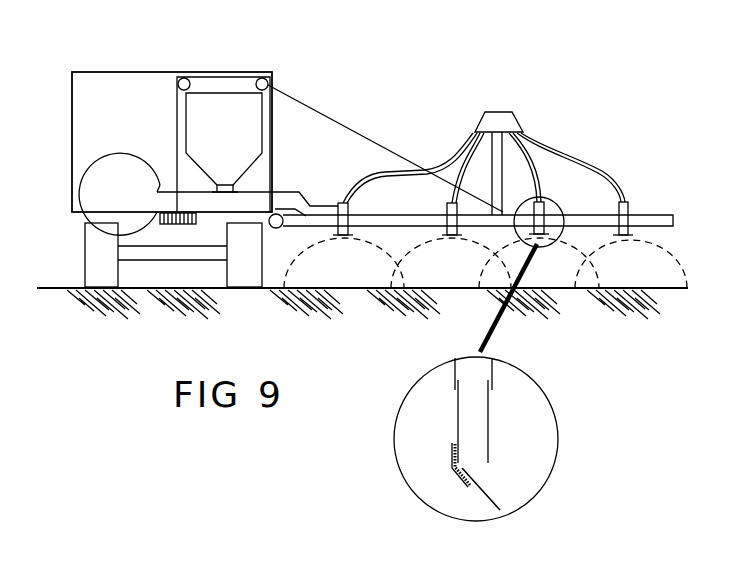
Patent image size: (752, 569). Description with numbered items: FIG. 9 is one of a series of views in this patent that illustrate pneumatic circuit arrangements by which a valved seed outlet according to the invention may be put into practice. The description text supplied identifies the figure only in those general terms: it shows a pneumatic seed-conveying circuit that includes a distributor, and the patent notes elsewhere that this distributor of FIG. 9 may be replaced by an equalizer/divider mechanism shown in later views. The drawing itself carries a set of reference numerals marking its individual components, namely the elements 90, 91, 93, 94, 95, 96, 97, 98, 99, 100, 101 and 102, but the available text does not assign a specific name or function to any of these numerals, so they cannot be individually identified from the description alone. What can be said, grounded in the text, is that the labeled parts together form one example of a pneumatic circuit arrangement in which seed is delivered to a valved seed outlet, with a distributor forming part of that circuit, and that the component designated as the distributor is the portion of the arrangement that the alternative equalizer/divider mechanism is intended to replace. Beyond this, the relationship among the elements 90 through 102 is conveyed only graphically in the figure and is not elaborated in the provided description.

The vehicle chassis with wheels 90 is at (76, 228).
The apparatus housing 91 is at (128, 58).
The nozzle 93 is at (343, 243).
The spray stream 94 is at (490, 485).
The feed tube 95 is at (472, 372).
The blower 96 is at (135, 184).
The hopper 97 is at (223, 107).
The boom 98 is at (296, 200).
The distribution manifold 99 is at (478, 124).
The hose 100 is at (584, 166).
The end nozzle 101 is at (628, 210).
The support line 102 is at (325, 112).